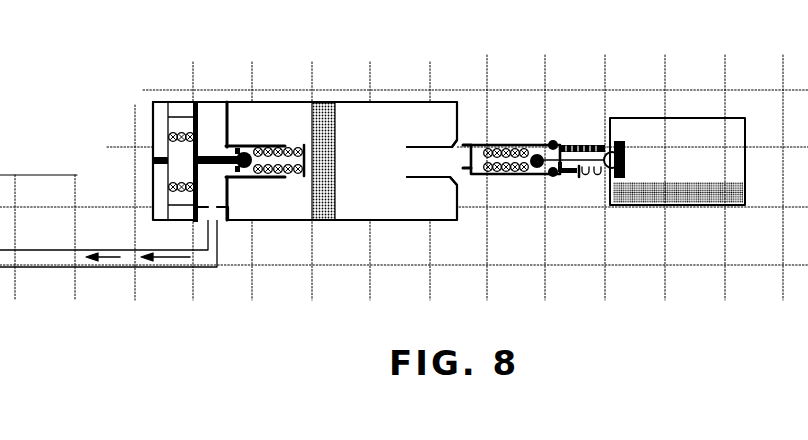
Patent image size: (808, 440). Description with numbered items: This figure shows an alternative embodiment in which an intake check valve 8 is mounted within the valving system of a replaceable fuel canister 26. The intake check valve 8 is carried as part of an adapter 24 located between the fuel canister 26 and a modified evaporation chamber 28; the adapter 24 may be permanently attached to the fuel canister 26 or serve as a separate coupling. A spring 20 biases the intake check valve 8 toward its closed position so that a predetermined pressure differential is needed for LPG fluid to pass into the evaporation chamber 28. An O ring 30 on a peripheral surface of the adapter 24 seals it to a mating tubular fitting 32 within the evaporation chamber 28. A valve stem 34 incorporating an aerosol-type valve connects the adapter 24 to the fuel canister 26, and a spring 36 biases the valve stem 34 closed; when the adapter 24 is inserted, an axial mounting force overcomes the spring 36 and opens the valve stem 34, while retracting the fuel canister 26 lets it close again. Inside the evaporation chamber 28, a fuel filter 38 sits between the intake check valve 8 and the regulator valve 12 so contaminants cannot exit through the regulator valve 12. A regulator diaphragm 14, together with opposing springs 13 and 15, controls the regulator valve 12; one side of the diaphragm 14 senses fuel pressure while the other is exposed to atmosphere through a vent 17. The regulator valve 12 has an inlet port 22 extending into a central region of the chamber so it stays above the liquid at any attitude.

The intake check valve 8 is at (540, 178).
The regulator valve 12 is at (247, 178).
The spring 13 is at (295, 173).
The regulator diaphragm 14 is at (197, 130).
The spring 15 is at (182, 188).
The vent 17 is at (160, 168).
The spring 20 is at (495, 176).
The inlet port 22 is at (287, 146).
The adapter 24 is at (488, 143).
The fuel canister 26 is at (660, 118).
The evaporation chamber 28 is at (364, 103).
The O ring 30 is at (553, 140).
The tubular fitting 32 is at (418, 167).
The valve stem 34 is at (587, 177).
The spring 36 is at (595, 143).
The fuel filter 38 is at (336, 190).